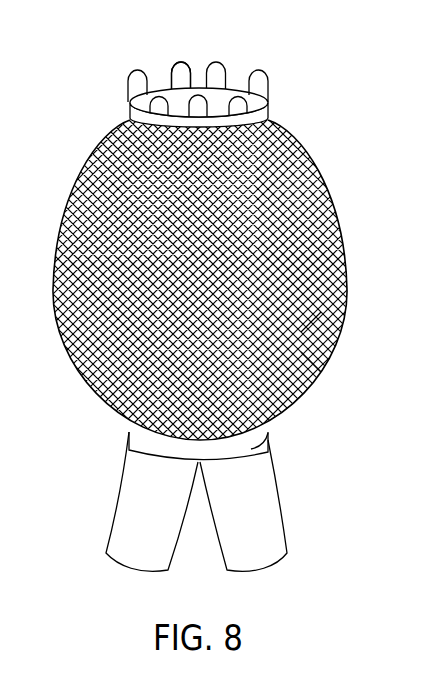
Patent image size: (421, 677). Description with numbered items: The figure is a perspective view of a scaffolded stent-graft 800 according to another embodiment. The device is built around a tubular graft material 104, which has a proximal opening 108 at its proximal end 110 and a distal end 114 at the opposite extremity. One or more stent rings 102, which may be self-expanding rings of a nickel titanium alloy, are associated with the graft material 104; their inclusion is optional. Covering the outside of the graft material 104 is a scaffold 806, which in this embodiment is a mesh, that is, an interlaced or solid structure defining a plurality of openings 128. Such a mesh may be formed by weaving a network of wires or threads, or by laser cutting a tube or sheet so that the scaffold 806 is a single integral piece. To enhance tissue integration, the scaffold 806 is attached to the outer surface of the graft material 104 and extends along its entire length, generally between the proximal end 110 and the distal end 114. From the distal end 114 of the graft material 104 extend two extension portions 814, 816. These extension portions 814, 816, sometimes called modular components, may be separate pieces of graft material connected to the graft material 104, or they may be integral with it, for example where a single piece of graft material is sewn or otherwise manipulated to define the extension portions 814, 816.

The scaffolded stent-graft 800 is at (95, 120).
The stent rings 102 is at (269, 96).
The graft material 104 is at (153, 90).
The proximal opening 108 is at (192, 57).
The proximal end 110 is at (237, 90).
The scaffold 806 is at (289, 162).
The openings 128 is at (311, 367).
The distal end 114 is at (270, 433).
The extension portion 814 is at (167, 529).
The extension portion 816 is at (262, 529).